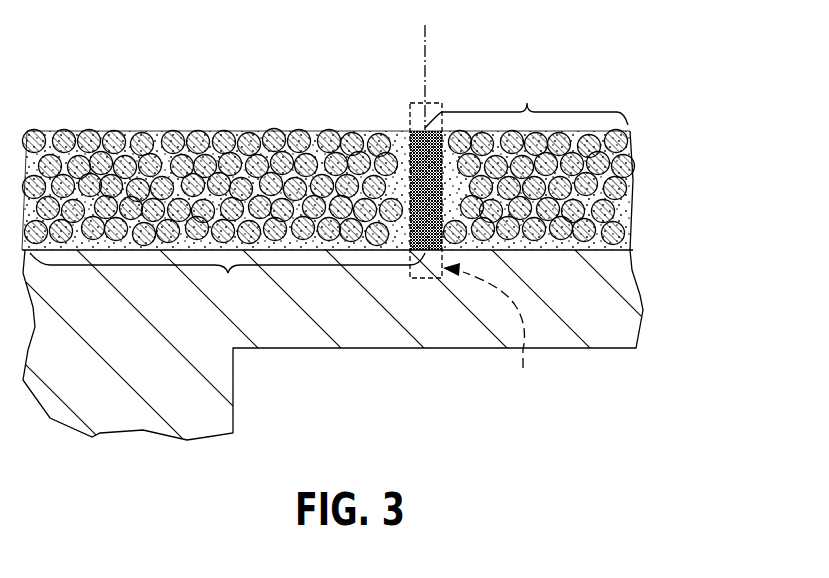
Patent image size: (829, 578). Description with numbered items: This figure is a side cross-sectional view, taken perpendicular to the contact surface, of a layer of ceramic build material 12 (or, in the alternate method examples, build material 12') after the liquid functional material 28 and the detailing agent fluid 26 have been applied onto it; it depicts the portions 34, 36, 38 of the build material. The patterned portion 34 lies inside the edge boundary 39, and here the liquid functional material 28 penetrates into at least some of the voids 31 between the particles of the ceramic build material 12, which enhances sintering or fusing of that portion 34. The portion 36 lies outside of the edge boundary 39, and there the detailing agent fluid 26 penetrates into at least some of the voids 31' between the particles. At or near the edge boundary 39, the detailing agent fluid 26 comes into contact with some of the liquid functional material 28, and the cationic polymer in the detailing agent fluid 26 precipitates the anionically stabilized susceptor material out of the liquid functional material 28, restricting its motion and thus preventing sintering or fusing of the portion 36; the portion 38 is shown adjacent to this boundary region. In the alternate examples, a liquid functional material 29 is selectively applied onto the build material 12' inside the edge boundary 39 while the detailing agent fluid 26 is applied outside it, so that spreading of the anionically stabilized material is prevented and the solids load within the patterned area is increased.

The ceramic build material 12 is at (327, 144).
The build material 12' is at (412, 190).
The liquid functional material 28 is at (177, 130).
The liquid functional material 29 is at (539, 187).
The edge boundary 39 is at (425, 45).
The portion 36 is at (526, 101).
The voids 31' is at (667, 190).
The portion 34 is at (227, 279).
The voids 31 is at (327, 329).
The portion 38 is at (490, 335).
The detailing agent fluid 26 is at (538, 250).